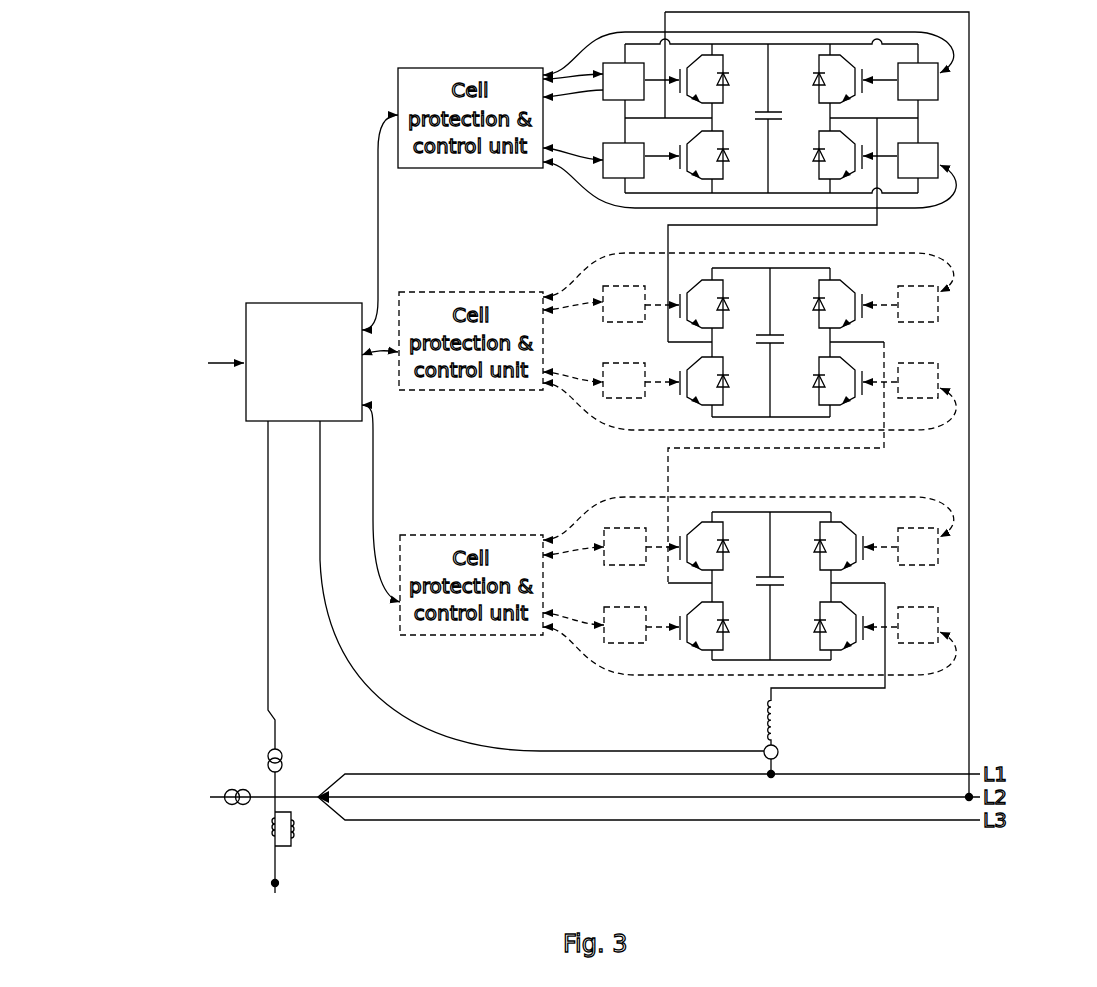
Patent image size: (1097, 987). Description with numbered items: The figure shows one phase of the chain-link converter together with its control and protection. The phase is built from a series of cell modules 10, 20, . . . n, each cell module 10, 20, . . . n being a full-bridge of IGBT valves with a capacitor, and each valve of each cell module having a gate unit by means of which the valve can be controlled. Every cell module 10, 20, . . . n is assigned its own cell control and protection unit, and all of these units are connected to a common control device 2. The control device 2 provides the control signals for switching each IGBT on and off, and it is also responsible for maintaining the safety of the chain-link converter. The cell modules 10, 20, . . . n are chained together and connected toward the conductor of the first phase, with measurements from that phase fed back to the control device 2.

The control device 2 is at (288, 303).
The cell module 10 is at (954, 117).
The cell module 20 is at (953, 345).
The cell module n is at (956, 590).